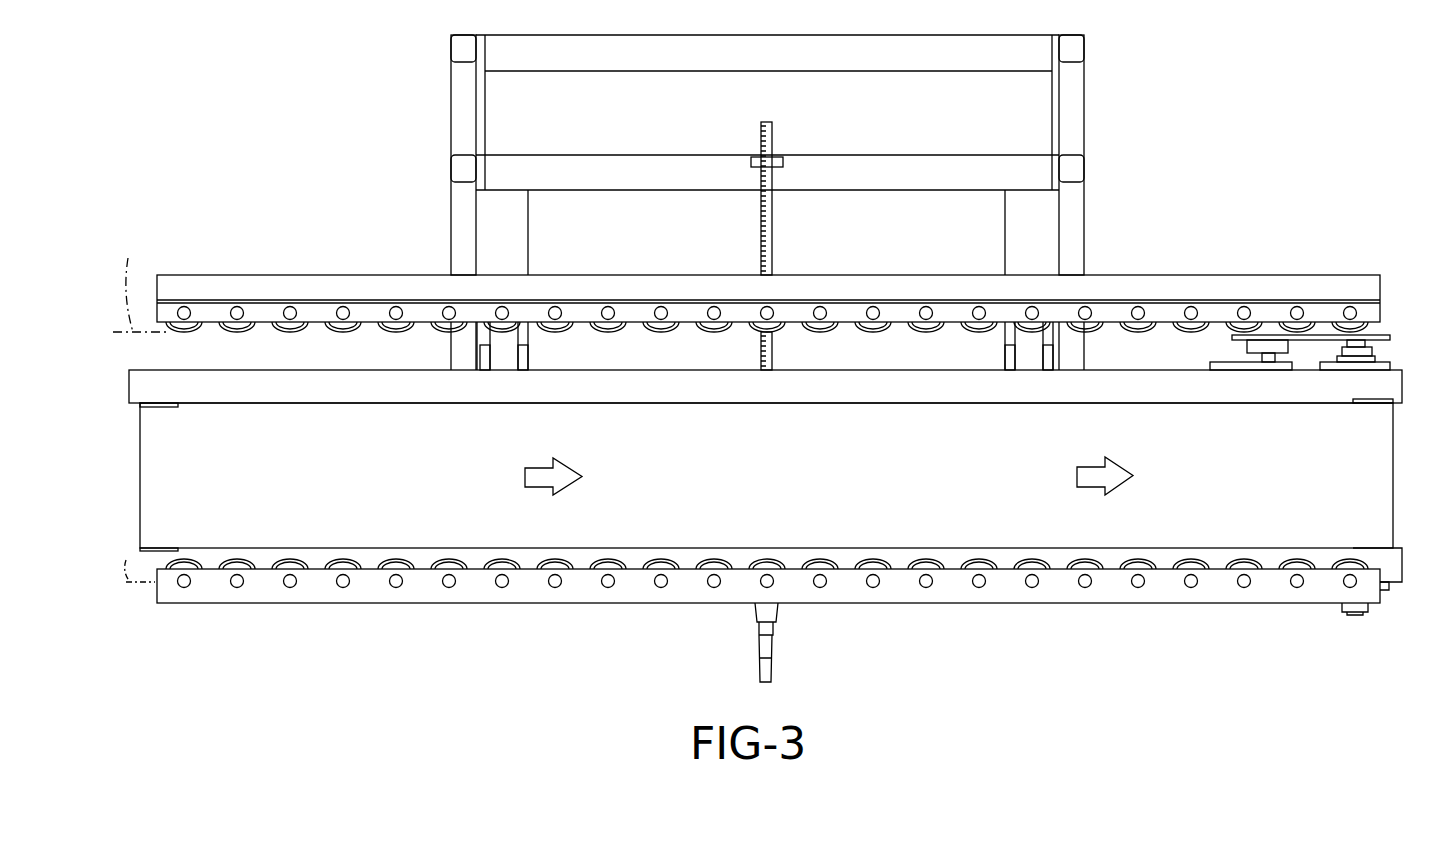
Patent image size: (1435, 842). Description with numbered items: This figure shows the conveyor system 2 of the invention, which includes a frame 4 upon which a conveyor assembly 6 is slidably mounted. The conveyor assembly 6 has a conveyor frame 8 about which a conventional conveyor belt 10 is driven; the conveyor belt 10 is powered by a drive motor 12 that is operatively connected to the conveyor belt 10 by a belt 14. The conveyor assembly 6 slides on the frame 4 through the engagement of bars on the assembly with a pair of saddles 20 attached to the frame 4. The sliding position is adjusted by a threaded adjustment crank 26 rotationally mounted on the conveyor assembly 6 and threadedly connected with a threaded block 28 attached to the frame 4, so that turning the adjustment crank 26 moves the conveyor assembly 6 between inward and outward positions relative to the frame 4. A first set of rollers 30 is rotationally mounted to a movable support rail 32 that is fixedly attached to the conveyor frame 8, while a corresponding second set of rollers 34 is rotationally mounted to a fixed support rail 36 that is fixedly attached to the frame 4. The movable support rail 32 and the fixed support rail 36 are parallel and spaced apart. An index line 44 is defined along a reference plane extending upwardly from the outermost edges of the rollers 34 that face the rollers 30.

The conveyor system 2 is at (518, 686).
The frame 4 is at (442, 99).
The conveyor assembly 6 is at (472, 619).
The conveyor frame 8 is at (628, 380).
The conveyor belt 10 is at (781, 488).
The drive motor 12 is at (1230, 363).
The belt 14 is at (1312, 341).
The saddles 20 is at (483, 354).
The threaded adjustment crank 26 is at (772, 235).
The threaded block 28 is at (750, 162).
The first set of rollers 30 is at (237, 561).
The movable support rail 32 is at (267, 611).
The second set of rollers 34 is at (237, 334).
The fixed support rail 36 is at (1273, 310).
The index line 44 is at (139, 409).